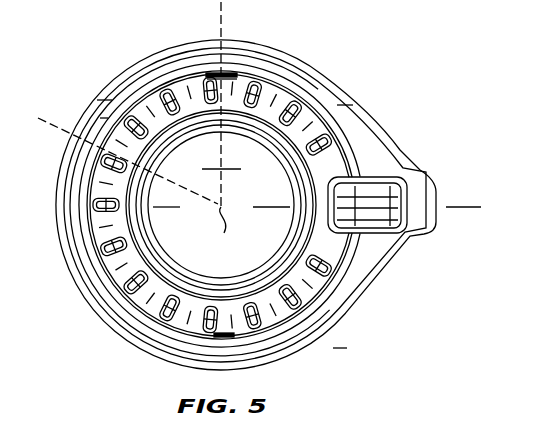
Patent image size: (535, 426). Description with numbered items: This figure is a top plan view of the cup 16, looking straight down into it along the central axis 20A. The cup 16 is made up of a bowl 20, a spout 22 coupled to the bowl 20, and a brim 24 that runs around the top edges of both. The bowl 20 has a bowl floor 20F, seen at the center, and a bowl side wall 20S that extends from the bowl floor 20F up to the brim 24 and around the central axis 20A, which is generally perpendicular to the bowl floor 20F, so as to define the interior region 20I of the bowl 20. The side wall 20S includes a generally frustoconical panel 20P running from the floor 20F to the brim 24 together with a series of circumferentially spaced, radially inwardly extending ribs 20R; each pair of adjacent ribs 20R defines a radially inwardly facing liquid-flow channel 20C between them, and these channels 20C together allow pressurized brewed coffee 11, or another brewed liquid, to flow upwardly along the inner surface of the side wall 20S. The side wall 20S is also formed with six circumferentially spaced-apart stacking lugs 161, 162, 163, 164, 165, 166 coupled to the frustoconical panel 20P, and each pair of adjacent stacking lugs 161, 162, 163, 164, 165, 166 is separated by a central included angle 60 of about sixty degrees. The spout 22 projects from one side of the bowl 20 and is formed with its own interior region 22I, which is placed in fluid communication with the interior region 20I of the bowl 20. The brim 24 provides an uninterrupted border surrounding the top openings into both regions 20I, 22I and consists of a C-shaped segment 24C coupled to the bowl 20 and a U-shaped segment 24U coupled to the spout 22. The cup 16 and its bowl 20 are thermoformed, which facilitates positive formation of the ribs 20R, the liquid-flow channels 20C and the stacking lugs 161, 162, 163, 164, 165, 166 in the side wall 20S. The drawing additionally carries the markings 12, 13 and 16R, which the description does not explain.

The pressurized brewed coffee 11 is at (268, 20).
The section line 12- 12 is at (265, 162).
The section line 13- 13 is at (43, 113).
The cup 16 is at (386, 62).
The outer ring rim 16R is at (183, 73).
The stacking lug 161 is at (224, 338).
The stacking lug 162 is at (358, 295).
The stacking lug 163 is at (356, 155).
The stacking lug 164 is at (228, 74).
The stacking lug 165 is at (108, 144).
The stacking lug 166 is at (112, 262).
The bowl 20 is at (150, 302).
The central axis 20A is at (252, 251).
The liquid-flow channels 20C is at (327, 163).
The bowl floor 20F is at (205, 246).
The interior region of bowl 20I is at (333, 112).
The frustoconical panel 20P is at (275, 103).
The ribs 20R is at (325, 256).
The bowl side wall 20S is at (378, 48).
The spout 22 is at (382, 224).
The interior region of spout 22I is at (388, 187).
The brim 24 is at (85, 295).
The C-shaped segment 24C is at (318, 330).
The U-shaped segment 24U is at (422, 234).
The central included angle 60 is at (214, 17).